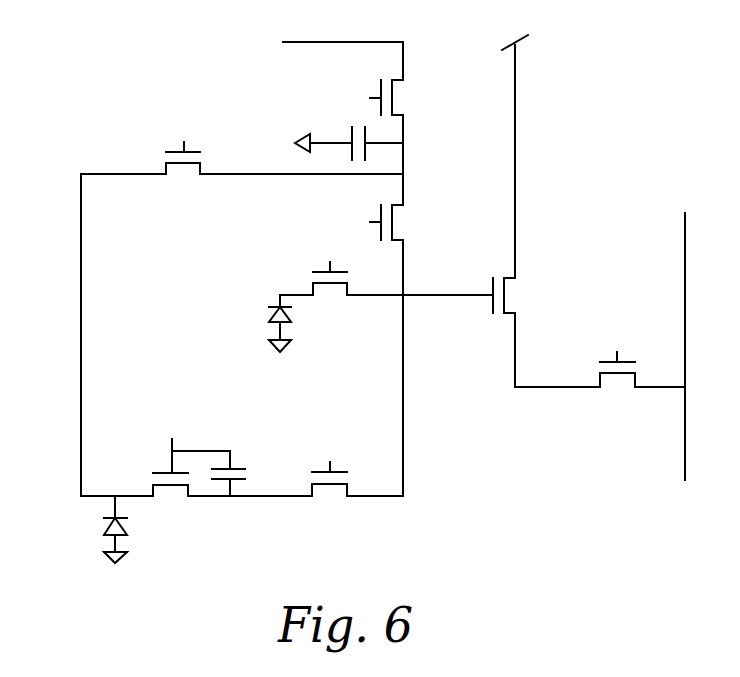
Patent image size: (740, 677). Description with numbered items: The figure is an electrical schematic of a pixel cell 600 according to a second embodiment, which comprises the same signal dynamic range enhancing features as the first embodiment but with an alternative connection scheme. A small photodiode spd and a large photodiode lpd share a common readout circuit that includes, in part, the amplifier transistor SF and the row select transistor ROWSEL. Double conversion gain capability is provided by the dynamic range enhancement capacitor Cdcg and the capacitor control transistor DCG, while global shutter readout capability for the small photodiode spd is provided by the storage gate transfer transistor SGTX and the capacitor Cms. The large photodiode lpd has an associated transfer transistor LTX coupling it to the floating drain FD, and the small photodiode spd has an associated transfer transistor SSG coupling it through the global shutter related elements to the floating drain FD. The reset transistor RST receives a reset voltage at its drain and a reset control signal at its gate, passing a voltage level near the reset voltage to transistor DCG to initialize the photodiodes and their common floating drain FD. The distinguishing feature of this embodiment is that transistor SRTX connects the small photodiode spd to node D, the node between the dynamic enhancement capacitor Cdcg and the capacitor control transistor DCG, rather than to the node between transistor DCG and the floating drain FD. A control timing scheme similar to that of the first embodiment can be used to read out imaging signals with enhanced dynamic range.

The pixel cell 600 is at (98, 63).
The reset transistor RST is at (395, 95).
The dynamic range enhancement capacitor Cdcg is at (346, 134).
The node D is at (418, 140).
The transistor SRTX is at (242, 162).
The capacitor control transistor DCG is at (393, 221).
The transfer transistor LTX is at (386, 281).
The large photodiode lpd is at (262, 323).
The floating drain FD is at (420, 326).
The amplifier transistor SF is at (512, 286).
The row select transistor ROWSEL is at (600, 372).
The transfer transistor SSG is at (196, 469).
The storage gate transfer transistor SGTX is at (349, 479).
The capacitor Cms is at (227, 466).
The small photodiode spd is at (93, 529).